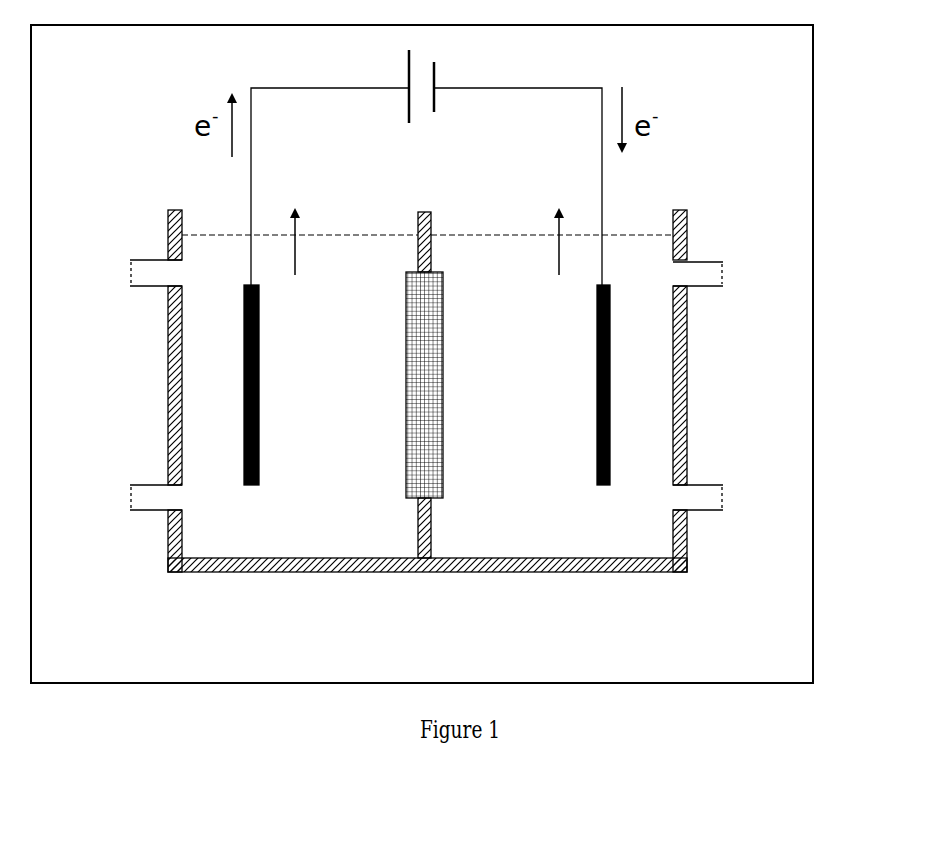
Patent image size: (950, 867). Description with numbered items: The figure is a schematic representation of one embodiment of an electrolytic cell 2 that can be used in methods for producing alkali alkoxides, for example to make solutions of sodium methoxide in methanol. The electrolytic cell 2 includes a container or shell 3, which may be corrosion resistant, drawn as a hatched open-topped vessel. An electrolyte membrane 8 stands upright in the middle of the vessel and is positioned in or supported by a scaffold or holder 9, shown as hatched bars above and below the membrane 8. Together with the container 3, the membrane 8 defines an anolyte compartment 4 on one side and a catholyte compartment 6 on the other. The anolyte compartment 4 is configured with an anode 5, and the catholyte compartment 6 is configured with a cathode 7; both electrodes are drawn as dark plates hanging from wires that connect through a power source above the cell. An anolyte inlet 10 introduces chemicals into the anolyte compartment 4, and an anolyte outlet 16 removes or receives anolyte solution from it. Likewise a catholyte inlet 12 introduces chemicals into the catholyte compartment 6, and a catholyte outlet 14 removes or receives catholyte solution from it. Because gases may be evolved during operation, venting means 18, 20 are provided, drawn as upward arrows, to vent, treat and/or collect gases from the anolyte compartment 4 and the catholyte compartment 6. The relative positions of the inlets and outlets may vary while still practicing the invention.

The electrolytic cell 2 is at (813, 348).
The container or shell 3 is at (240, 571).
The anolyte compartment 4 is at (289, 533).
The anode 5 is at (245, 358).
The catholyte compartment 6 is at (572, 535).
The cathode 7 is at (595, 350).
The electrolyte membrane 8 is at (406, 322).
The scaffold or holder 9 is at (418, 242).
The anolyte inlet 10 is at (143, 498).
The catholyte inlet 12 is at (712, 495).
The catholyte outlet 14 is at (710, 272).
The anolyte outlet 16 is at (144, 275).
The venting means 18 is at (294, 225).
The venting means 20 is at (554, 225).